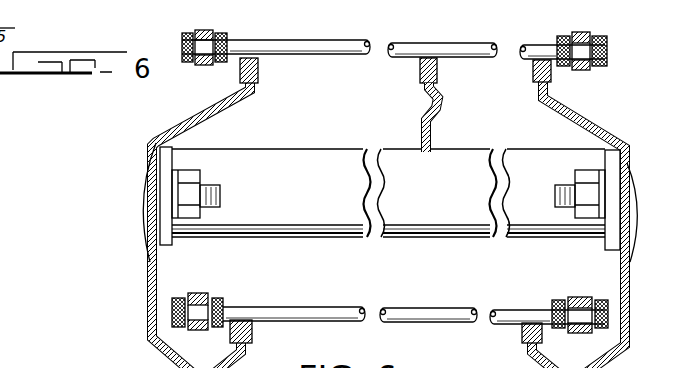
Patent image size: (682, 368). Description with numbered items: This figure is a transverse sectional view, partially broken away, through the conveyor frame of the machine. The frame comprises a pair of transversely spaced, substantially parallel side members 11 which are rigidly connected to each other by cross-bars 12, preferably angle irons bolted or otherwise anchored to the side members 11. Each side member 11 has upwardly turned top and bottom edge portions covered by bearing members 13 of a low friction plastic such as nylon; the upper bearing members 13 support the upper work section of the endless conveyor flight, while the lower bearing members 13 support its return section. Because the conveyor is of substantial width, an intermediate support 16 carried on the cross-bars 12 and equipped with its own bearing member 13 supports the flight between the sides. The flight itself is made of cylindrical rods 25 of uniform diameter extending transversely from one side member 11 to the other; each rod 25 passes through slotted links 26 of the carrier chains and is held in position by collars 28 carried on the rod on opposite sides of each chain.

The side member 11 is at (148, 262).
The cross-bar 12 is at (346, 222).
The bearing member 13 is at (257, 80).
The intermediate support 16 is at (433, 126).
The rod 25 is at (311, 55).
The link 26 is at (207, 293).
The collar 28 is at (563, 66).